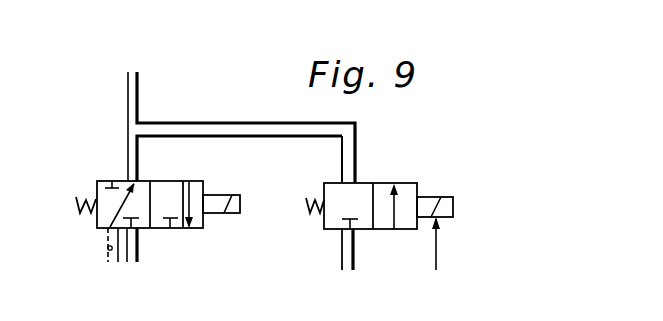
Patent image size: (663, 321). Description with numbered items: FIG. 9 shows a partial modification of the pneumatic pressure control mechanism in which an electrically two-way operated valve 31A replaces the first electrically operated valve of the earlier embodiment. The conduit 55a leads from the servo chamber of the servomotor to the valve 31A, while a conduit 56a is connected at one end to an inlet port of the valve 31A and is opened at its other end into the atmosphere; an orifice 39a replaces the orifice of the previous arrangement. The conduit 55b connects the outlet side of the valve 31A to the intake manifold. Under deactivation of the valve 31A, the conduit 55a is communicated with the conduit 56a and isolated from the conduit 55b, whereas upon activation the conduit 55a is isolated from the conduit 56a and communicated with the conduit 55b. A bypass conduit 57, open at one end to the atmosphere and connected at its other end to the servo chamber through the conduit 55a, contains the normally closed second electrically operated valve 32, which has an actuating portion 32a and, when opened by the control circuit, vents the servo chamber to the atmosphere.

The conduit 55a is at (127, 96).
The bypass conduit 57 is at (211, 135).
The electrically two-way operated valve 31A is at (91, 230).
The orifice 39a is at (106, 252).
The conduit 56a is at (118, 262).
The conduit 55b is at (134, 240).
The second electrically operated valve 32 is at (394, 172).
The solenoid 32a is at (451, 206).